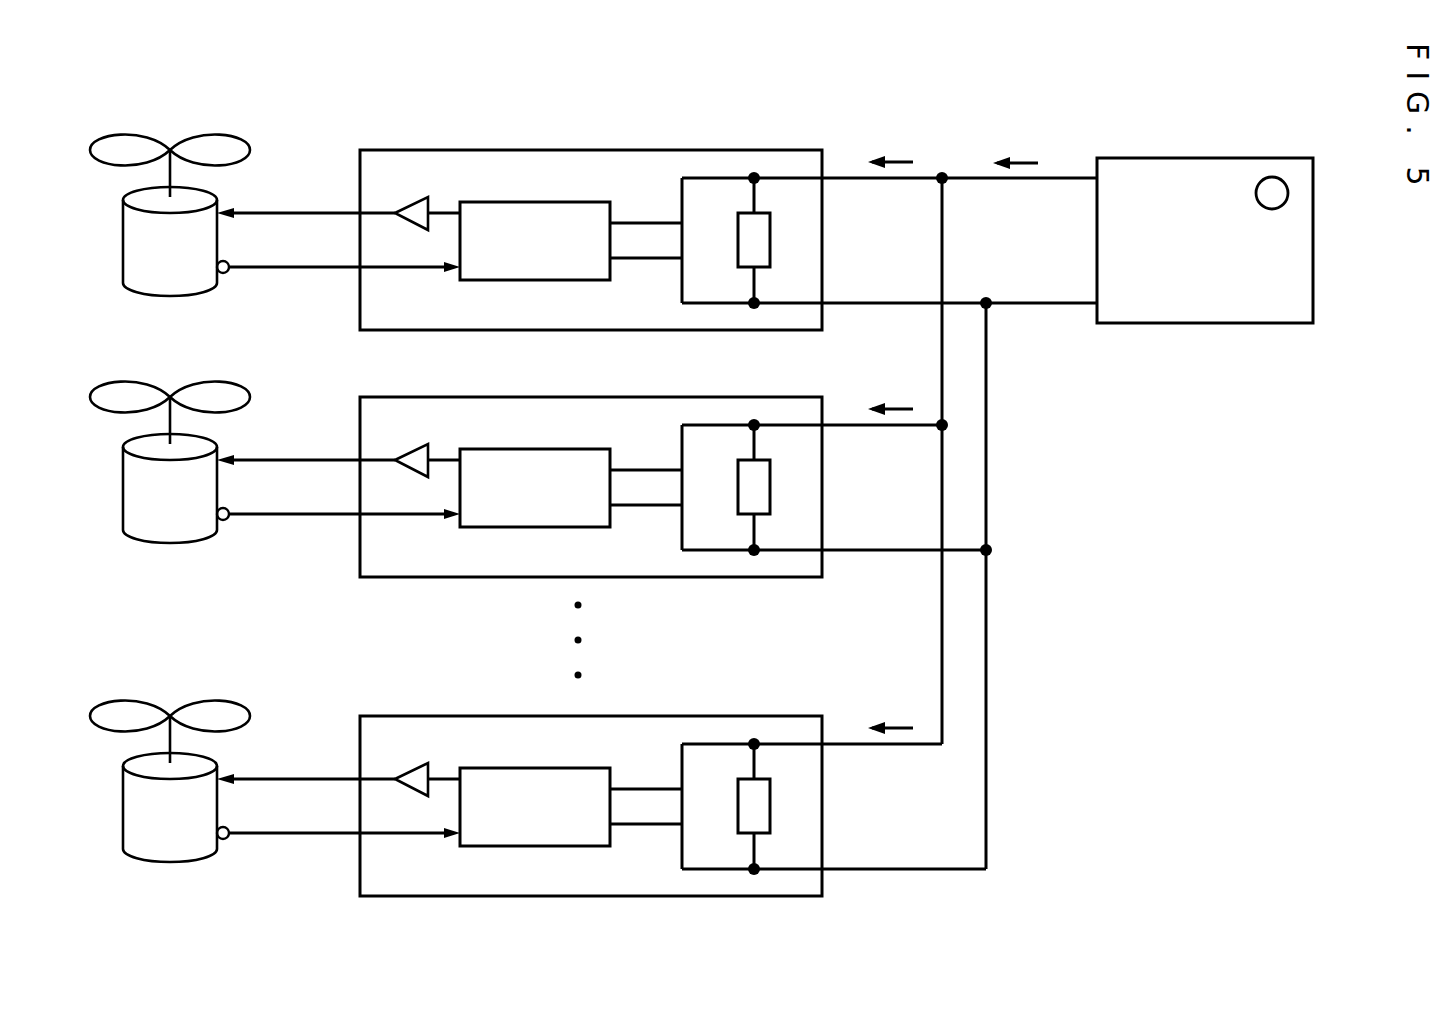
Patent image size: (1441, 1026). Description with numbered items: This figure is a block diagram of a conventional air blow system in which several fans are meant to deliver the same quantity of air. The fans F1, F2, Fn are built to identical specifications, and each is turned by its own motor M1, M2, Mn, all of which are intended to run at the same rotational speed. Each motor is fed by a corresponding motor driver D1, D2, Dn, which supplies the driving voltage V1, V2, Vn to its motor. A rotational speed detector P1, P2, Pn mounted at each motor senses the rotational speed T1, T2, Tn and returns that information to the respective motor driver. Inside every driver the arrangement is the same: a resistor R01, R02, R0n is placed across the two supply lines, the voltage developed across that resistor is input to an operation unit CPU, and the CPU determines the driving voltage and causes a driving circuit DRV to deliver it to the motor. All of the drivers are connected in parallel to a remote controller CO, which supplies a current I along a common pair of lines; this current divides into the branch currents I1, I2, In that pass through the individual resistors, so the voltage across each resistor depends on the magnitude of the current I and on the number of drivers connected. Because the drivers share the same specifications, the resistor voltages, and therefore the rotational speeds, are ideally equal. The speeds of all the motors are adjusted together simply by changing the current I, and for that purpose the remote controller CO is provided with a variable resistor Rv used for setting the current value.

The fan F1 is at (118, 147).
The fan F2 is at (170, 388).
The fan Fn is at (170, 707).
The motor M1 is at (193, 273).
The motor M2 is at (170, 488).
The motor Mn is at (170, 807).
The rotational speed detector P1 is at (226, 279).
The rotational speed detector P2 is at (221, 551).
The rotational speed detector Pn is at (221, 870).
The driving voltage V1 is at (306, 200).
The driving voltage V2 is at (306, 447).
The driving voltage Vn is at (306, 766).
The rotational speed T1 is at (344, 254).
The rotational speed T2 is at (344, 501).
The rotational speed Tn is at (344, 820).
The motor driver D1 is at (765, 150).
The motor driver D2 is at (591, 454).
The motor driver Dn is at (591, 773).
The resistor R01 is at (770, 240).
The resistor R02 is at (798, 487).
The resistor R0n is at (798, 806).
The current I1 is at (890, 146).
The current I2 is at (890, 393).
The current In is at (890, 712).
The current I is at (1015, 147).
The driving circuit DRV is at (413, 197).
The operation unit CPU is at (535, 524).
The remote controller CO is at (1157, 324).
The variable resistor Rv is at (1288, 193).